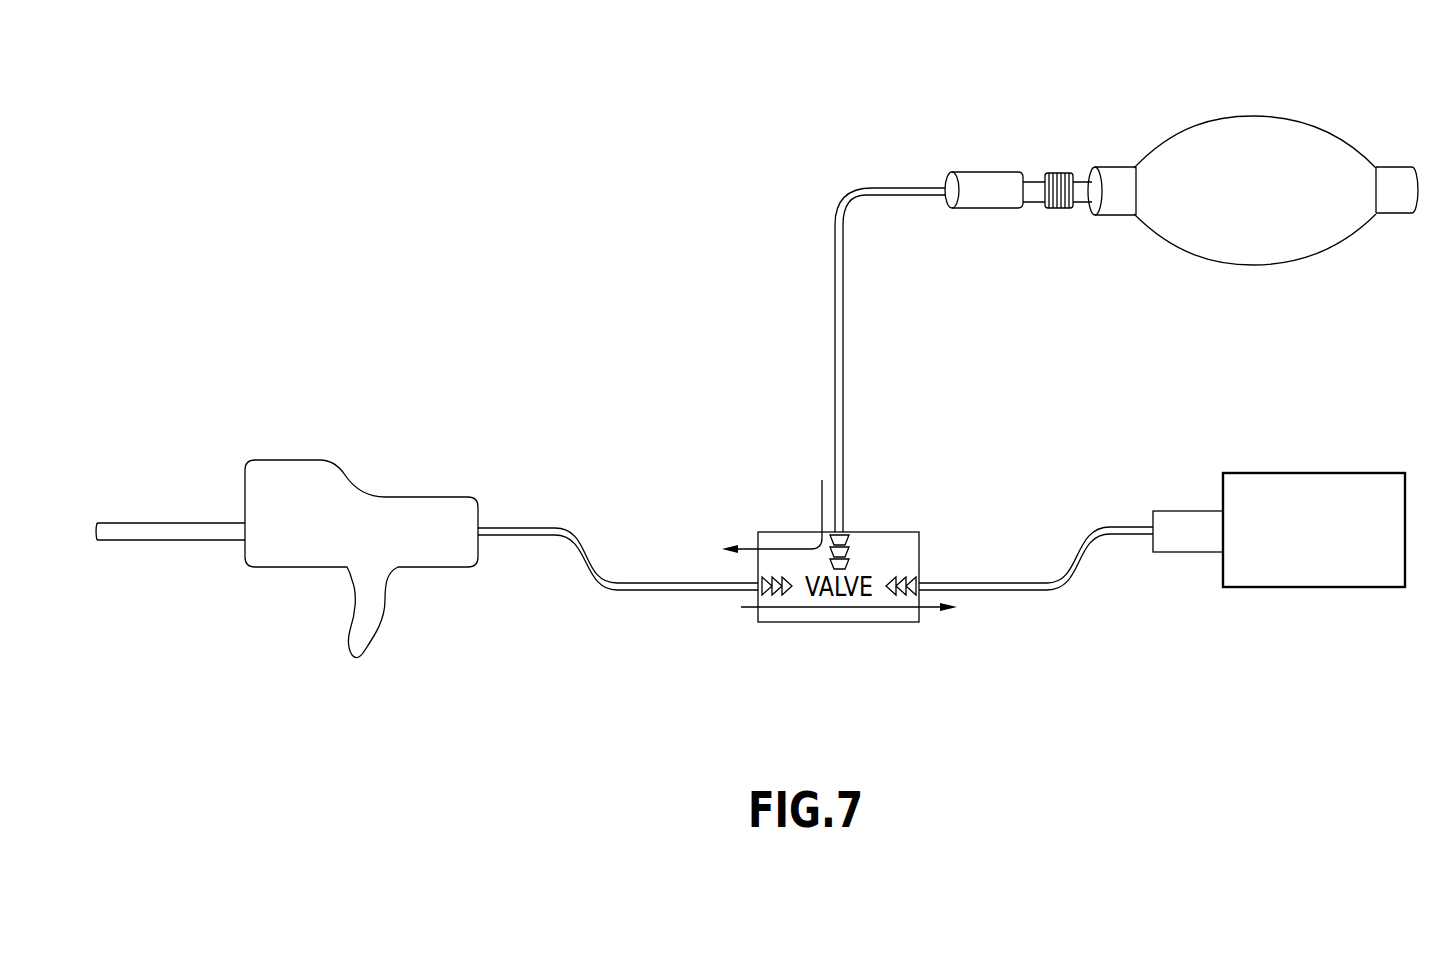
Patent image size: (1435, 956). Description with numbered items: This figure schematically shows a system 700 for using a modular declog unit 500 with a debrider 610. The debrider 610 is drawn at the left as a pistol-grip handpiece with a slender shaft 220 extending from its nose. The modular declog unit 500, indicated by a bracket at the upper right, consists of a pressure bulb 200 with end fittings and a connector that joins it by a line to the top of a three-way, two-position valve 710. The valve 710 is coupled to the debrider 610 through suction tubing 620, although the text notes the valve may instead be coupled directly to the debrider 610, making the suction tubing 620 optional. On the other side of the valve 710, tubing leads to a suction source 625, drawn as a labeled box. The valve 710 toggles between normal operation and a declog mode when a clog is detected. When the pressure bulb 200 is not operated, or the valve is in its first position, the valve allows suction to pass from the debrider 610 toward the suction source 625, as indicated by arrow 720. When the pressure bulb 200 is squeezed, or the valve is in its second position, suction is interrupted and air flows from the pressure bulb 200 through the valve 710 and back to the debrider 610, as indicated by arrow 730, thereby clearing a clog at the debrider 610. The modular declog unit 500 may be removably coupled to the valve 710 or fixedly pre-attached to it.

The pressure bulb 200 is at (1253, 206).
The shaft 220 is at (138, 542).
The modular declog unit 500 is at (1184, 167).
The debrider 610 is at (367, 471).
The suction tubing 620 is at (530, 527).
The suction source 625 is at (1313, 588).
The system 700 is at (754, 226).
The 3-way 2-position valve 710 is at (815, 623).
The arrow (suction) 720 is at (873, 608).
The arrow (air flow) 730 is at (787, 545).